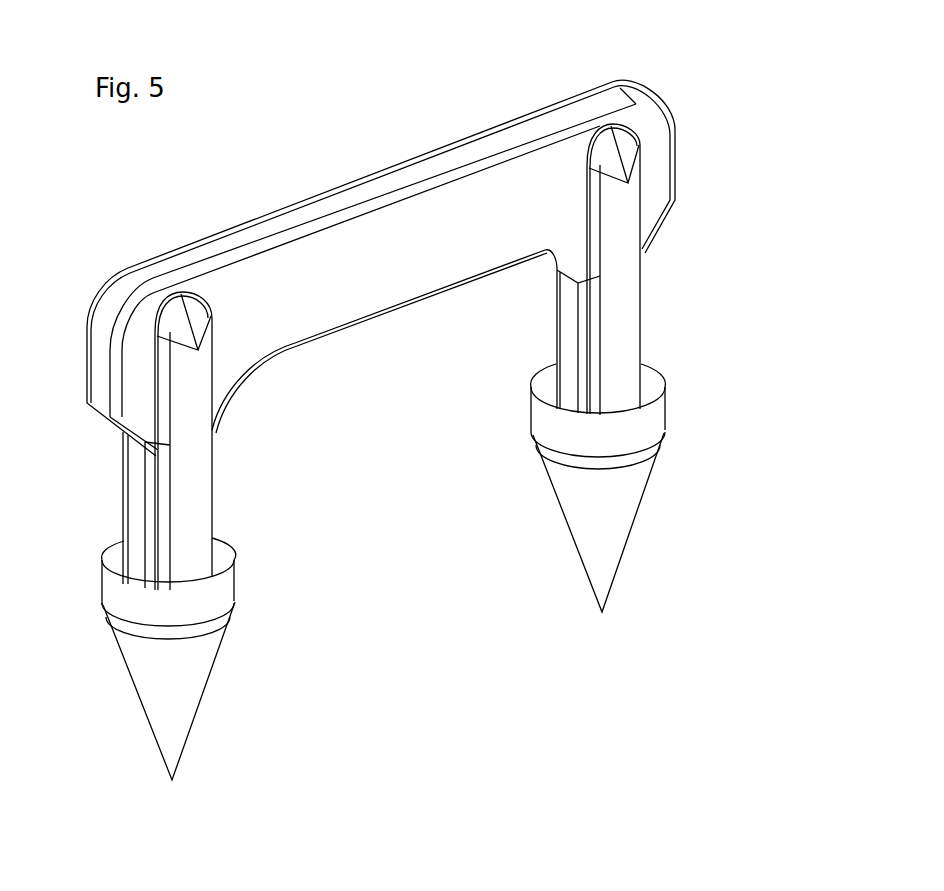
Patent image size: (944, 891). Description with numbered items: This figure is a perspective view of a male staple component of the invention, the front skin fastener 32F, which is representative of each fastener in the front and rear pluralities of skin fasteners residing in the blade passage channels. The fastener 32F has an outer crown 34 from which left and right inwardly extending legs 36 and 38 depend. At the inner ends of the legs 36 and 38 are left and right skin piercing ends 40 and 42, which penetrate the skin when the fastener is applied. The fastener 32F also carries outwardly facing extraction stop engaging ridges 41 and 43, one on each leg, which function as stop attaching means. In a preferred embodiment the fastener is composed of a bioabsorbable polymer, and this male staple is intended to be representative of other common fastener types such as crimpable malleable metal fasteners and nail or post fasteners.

The front skin fastener 32F is at (377, 147).
The outer crown 34 is at (372, 288).
The left inwardly extending leg 36 is at (137, 510).
The right inwardly extending leg 38 is at (627, 342).
The left skin piercing end 40 is at (193, 687).
The extraction stop engaging ridge 41 is at (222, 557).
The right skin piercing end 42 is at (625, 500).
The extraction stop engaging ridge 43 is at (650, 387).